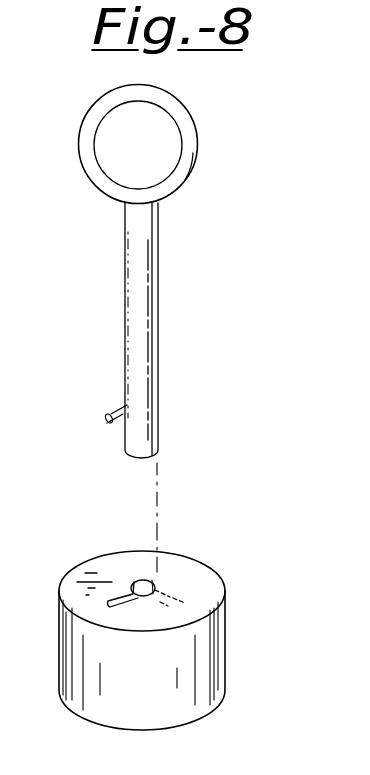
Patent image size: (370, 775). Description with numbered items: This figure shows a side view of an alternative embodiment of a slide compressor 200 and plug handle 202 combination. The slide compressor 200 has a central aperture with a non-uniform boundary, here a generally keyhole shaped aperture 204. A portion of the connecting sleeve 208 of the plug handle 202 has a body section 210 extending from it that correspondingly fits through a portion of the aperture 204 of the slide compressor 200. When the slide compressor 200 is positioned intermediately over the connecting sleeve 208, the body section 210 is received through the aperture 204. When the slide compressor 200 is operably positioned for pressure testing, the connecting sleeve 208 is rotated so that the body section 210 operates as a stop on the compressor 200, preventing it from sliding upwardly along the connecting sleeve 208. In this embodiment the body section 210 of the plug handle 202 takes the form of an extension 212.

The slide compressor 200 is at (227, 669).
The plug handle 202 is at (196, 126).
The keyhole shaped aperture 204 is at (137, 582).
The connecting sleeve 208 is at (162, 423).
The body section 210 is at (156, 320).
The extension 212 is at (118, 408).